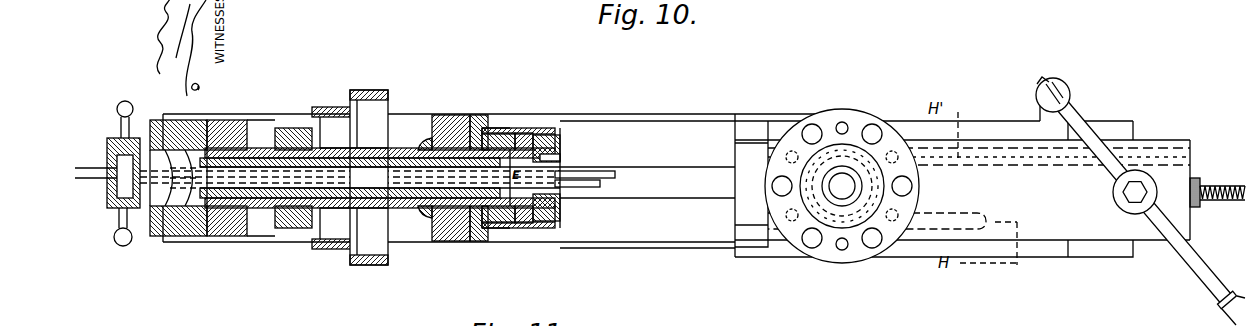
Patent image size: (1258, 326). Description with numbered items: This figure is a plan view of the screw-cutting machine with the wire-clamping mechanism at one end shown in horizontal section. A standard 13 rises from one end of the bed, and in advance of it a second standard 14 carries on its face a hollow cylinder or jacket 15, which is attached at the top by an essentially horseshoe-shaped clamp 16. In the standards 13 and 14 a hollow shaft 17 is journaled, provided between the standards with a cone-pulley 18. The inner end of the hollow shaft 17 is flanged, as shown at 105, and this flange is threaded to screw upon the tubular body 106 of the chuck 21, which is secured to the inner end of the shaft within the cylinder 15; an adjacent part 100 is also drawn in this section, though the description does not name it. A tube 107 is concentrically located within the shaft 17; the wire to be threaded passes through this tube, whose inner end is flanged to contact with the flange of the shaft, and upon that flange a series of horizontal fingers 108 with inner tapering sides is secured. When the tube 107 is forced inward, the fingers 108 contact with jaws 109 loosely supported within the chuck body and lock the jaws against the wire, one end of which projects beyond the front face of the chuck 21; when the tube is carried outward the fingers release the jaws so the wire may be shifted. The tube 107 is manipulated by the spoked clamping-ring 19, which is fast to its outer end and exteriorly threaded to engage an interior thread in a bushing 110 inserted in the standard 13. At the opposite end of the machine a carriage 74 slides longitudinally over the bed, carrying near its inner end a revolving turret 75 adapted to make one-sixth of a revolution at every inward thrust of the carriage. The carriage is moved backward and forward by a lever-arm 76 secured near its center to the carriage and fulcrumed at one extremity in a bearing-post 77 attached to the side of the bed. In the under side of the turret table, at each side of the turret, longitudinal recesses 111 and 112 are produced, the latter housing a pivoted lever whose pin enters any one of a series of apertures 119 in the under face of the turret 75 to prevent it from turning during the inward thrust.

The spoked clamping-ring 19 is at (108, 138).
The bushing 110 is at (164, 124).
The standard 13 is at (205, 243).
The cone-pulley 18 is at (348, 110).
The hollow shaft 17 is at (396, 150).
The tube 107 is at (402, 209).
The standard 14 is at (446, 243).
The flange 105 is at (493, 132).
The tubular body 106 is at (562, 210).
The bushing 100 is at (523, 132).
The hollow cylinder or jacket 15 is at (536, 127).
The chuck 21 is at (562, 148).
The horizontal fingers 108 is at (562, 158).
The jaws 109 is at (580, 175).
The horseshoe-shaped clamp 16 is at (537, 243).
The carriage 74 is at (990, 176).
The longitudinal recess 112 is at (979, 157).
The longitudinal recess 111 is at (962, 222).
The revolving turret 75 is at (816, 123).
The apertures 119 is at (845, 125).
The lever-arm 76 is at (1150, 213).
The bearing-post 77 is at (1071, 92).